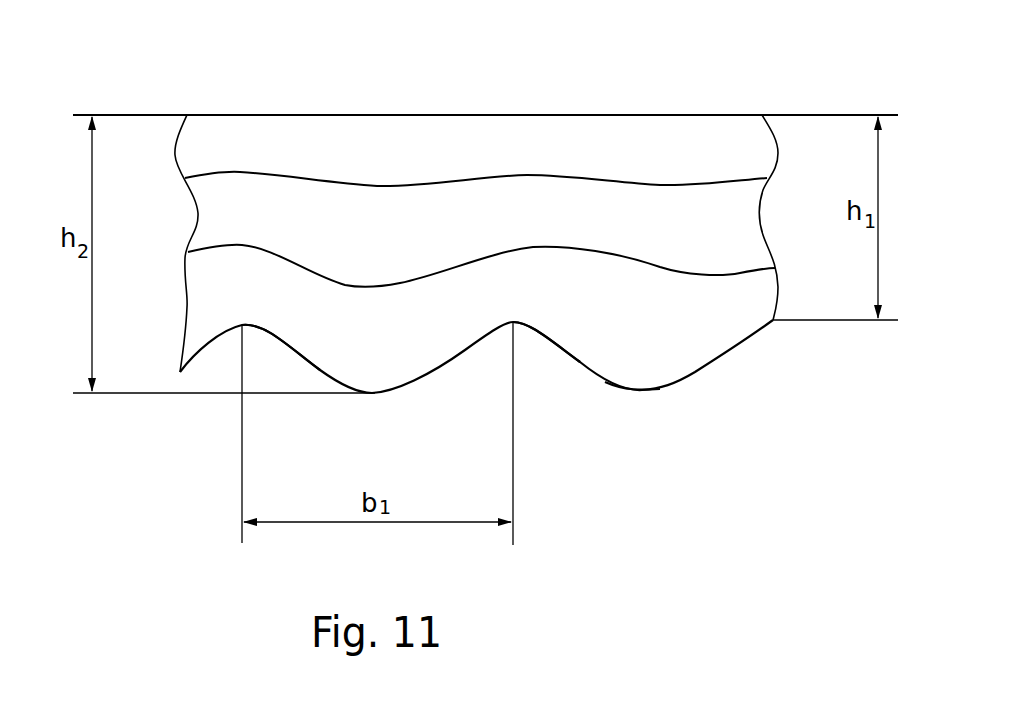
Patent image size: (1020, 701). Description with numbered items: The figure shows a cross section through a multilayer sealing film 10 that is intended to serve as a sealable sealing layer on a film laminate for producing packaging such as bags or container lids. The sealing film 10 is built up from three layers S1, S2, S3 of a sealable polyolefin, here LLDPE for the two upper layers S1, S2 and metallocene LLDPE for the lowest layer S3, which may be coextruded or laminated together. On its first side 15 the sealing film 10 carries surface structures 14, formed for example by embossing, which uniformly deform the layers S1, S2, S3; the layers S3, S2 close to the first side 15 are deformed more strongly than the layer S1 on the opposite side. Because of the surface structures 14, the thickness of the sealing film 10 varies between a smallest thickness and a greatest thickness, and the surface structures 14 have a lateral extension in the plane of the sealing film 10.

The multilayer sealing film 10 is at (676, 112).
The surface structures 14 is at (531, 345).
The first side 15 is at (674, 389).
The layer S1 is at (247, 138).
The layer S2 is at (242, 210).
The layer S3 is at (233, 287).